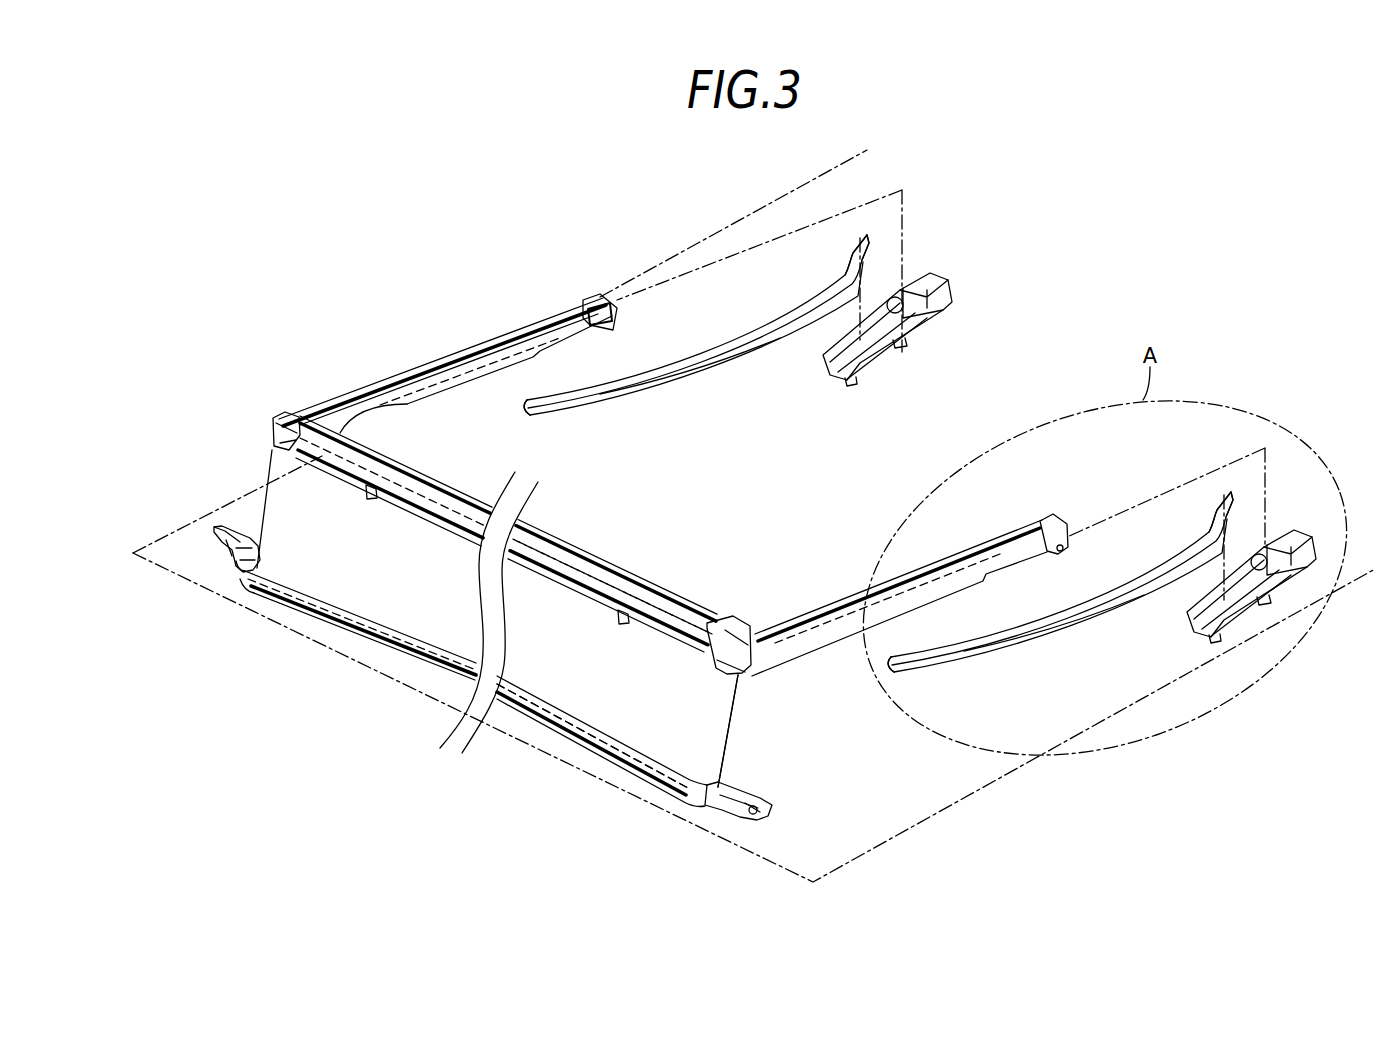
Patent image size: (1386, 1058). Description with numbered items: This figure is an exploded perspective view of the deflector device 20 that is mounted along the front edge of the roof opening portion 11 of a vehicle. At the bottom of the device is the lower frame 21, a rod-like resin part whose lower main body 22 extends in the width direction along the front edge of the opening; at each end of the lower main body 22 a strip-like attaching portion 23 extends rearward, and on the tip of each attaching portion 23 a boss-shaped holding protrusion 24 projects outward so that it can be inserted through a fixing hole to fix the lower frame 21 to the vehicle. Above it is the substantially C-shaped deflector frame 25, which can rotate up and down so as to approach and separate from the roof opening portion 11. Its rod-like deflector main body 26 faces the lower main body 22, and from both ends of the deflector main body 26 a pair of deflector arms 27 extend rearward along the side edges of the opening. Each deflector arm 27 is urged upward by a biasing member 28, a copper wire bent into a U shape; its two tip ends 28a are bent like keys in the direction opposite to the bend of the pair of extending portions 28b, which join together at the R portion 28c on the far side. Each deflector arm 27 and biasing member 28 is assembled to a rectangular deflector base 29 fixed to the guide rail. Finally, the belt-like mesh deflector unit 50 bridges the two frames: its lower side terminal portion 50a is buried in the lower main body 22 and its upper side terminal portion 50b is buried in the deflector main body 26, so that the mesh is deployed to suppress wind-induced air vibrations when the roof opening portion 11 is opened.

The roof opening portion 11 is at (713, 233).
The deflector device 20 is at (298, 318).
The lower frame 21 is at (657, 782).
The lower main body 22 is at (273, 600).
The attaching portion 23 is at (235, 557).
The holding protrusion 24 is at (213, 538).
The deflector frame 25 is at (592, 555).
The deflector main body 26 is at (383, 468).
The deflector arm 27 is at (425, 370).
The biasing member 28 is at (730, 367).
The tip end 28a is at (858, 252).
The extending portion 28b is at (697, 365).
The R portion 28c is at (527, 405).
The deflector base 29 is at (937, 273).
The deflector unit 50 is at (722, 708).
The lower side terminal portion 50a is at (680, 800).
The upper side terminal portion 50b is at (653, 595).